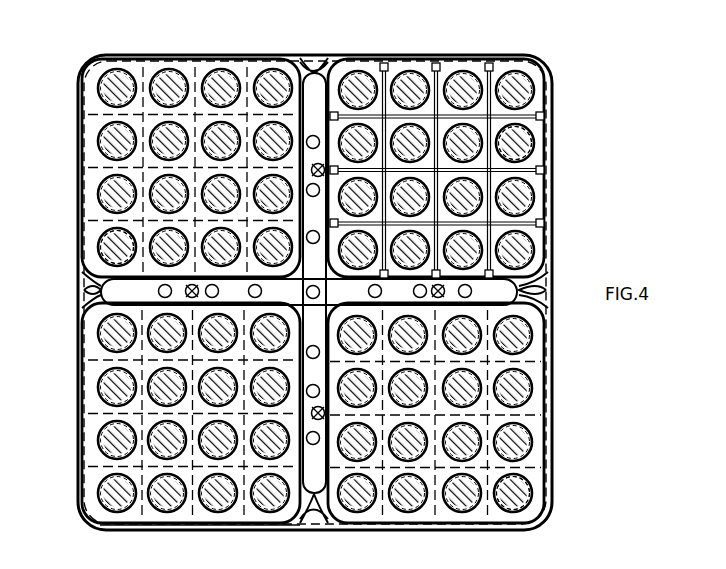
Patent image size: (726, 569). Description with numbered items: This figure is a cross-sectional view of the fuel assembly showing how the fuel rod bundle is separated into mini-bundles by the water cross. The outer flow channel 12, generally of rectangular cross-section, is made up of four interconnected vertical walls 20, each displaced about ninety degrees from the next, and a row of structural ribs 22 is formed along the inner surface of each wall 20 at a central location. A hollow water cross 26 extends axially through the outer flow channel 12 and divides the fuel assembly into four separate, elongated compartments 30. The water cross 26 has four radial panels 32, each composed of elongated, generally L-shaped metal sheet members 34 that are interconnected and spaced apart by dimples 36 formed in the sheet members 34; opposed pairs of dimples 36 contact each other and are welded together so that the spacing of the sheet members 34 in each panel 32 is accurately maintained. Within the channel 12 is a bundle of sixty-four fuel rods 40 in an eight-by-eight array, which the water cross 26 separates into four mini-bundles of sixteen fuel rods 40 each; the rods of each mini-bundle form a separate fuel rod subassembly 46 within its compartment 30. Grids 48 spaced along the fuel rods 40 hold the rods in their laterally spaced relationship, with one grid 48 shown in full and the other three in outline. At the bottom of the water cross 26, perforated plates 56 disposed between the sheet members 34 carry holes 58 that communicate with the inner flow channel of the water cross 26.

The outer flow channel 12 is at (554, 420).
The vertical wall 20 is at (200, 57).
The structural rib 22 is at (313, 60).
The water cross 26 is at (292, 522).
The compartment 30 is at (168, 58).
The radial panel 32 is at (300, 70).
The sheet member 34 is at (340, 68).
The dimple 36 is at (308, 172).
The fuel rod 40 is at (100, 112).
The fuel rod subassembly 46 is at (140, 55).
The grid 48 is at (542, 150).
The perforated plate 56 is at (100, 292).
The hole 58 is at (313, 250).